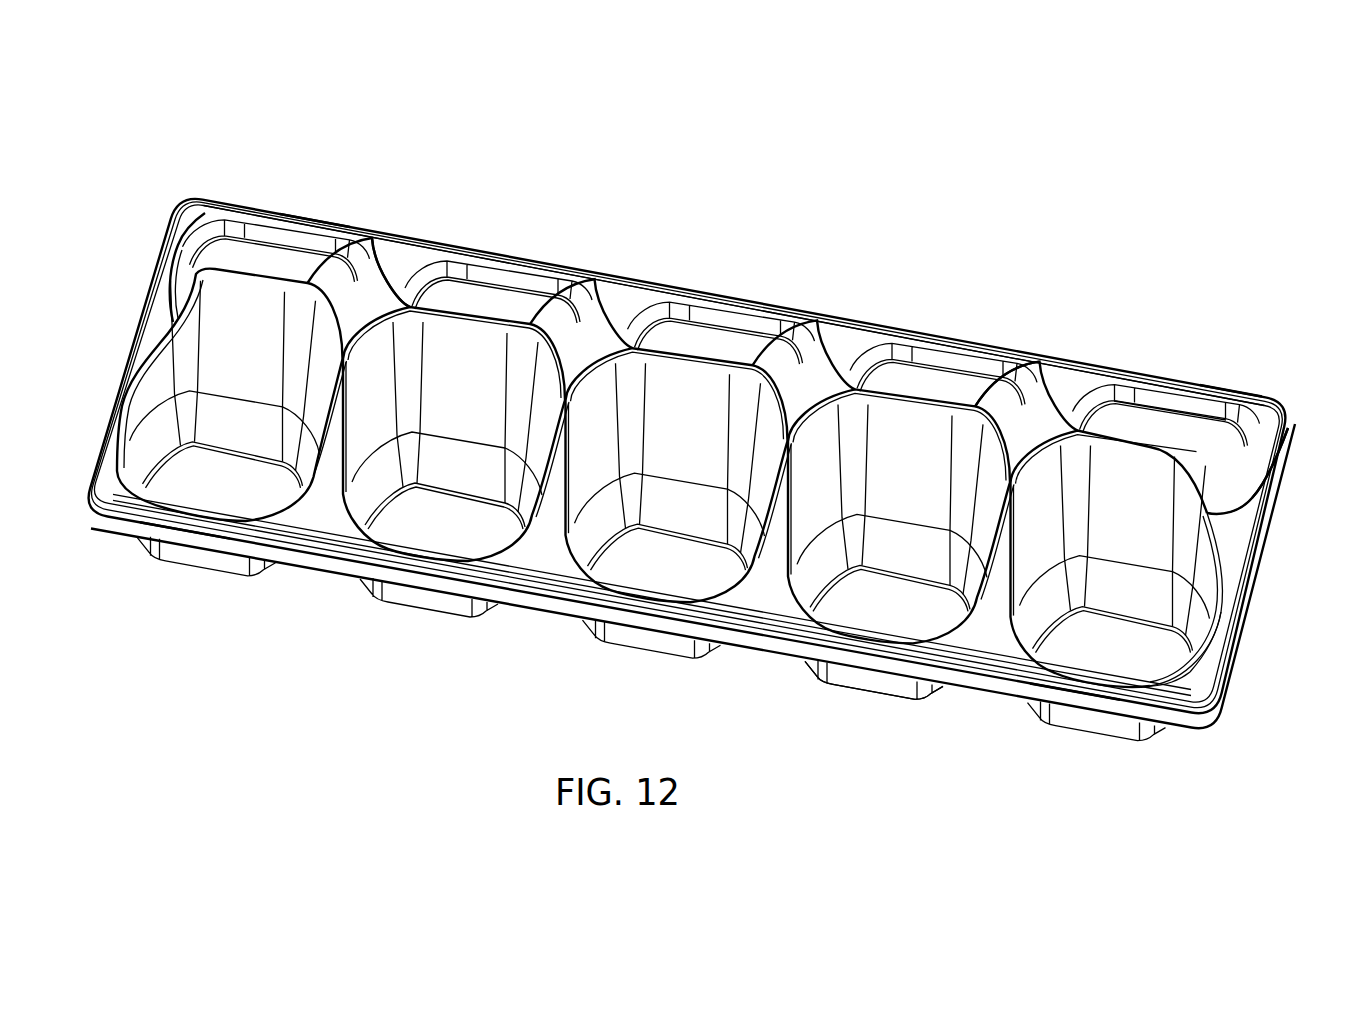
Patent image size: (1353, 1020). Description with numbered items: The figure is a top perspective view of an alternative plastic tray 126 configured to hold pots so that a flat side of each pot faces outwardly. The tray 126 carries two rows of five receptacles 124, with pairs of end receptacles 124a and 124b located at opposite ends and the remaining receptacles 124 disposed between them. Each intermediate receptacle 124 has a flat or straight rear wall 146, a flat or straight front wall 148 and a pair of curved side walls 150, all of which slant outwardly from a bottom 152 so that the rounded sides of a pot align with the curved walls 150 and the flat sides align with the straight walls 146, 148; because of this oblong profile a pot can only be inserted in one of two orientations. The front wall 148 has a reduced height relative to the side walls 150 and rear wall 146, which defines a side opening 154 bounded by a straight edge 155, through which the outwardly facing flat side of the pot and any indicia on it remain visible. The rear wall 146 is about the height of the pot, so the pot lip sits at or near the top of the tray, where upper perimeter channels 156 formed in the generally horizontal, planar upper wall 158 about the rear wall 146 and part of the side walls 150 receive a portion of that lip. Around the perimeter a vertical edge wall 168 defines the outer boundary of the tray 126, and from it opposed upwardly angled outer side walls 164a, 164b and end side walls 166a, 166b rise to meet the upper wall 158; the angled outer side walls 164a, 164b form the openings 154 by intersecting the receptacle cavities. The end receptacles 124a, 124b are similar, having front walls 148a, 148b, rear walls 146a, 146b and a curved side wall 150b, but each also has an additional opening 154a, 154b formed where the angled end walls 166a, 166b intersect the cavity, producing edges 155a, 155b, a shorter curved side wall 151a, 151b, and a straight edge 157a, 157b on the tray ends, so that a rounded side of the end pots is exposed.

The receptacle 124 is at (753, 343).
The end receptacle 124a is at (1190, 427).
The end receptacle 124b is at (203, 263).
The tray 126 is at (163, 142).
The rear wall 146 is at (474, 402).
The rear wall of end receptacle 146a is at (232, 395).
The rear wall of end receptacle 146b is at (1117, 559).
The front wall 148 is at (497, 297).
The front wall of end receptacle 148a is at (1158, 420).
The front wall of end receptacle 148b is at (292, 260).
The side wall 150 is at (384, 409).
The side wall of end receptacle 150b is at (1055, 528).
The shorter curved side wall 151a is at (1247, 463).
The shorter curved side wall 151b is at (183, 284).
The bottom 152 is at (446, 537).
The side opening 154 is at (510, 550).
The additional opening 154a is at (1243, 507).
The additional opening 154b is at (1207, 693).
The straight edge 155 is at (721, 298).
The edge 155a is at (1250, 397).
The edge 155b is at (313, 217).
The upper perimeter channel 156 is at (253, 274).
The straight edge 157a is at (1257, 474).
The straight edge 157b is at (1210, 640).
The upper wall 158 is at (370, 301).
The outer side wall 164a is at (313, 498).
The outer side wall 164b is at (627, 307).
The end side wall 166a is at (1227, 544).
The end side wall 166b is at (160, 337).
The vertical edge wall 168 is at (127, 521).